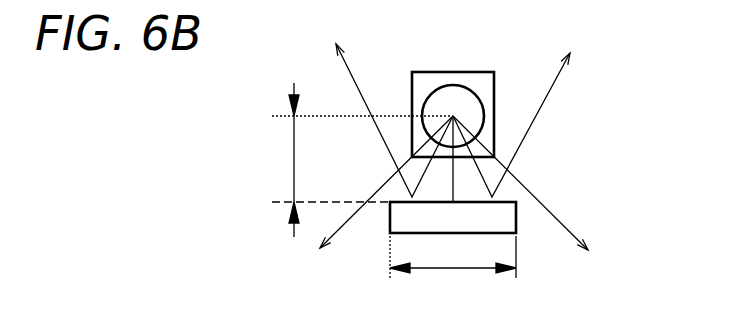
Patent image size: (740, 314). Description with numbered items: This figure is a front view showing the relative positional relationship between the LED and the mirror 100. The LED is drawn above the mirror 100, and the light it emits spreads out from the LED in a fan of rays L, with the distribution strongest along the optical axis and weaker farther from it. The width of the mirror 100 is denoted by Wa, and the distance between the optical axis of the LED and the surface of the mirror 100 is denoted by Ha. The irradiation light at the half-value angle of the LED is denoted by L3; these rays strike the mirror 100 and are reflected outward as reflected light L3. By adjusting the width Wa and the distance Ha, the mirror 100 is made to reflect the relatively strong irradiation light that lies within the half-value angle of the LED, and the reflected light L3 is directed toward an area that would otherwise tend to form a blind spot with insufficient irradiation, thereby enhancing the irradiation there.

The mirror 100 is at (516, 203).
The element LED is at (455, 72).
The direct light rays L is at (455, 196).
The irradiation light at the half-value angle L3 is at (453, 106).
The distance between the optical axis of the LED and the surface of the mirror Ha is at (356, 160).
The width of the mirror Wa is at (453, 257).